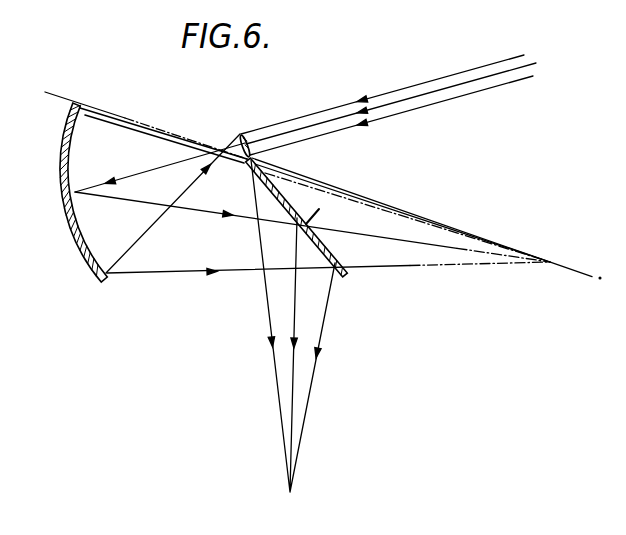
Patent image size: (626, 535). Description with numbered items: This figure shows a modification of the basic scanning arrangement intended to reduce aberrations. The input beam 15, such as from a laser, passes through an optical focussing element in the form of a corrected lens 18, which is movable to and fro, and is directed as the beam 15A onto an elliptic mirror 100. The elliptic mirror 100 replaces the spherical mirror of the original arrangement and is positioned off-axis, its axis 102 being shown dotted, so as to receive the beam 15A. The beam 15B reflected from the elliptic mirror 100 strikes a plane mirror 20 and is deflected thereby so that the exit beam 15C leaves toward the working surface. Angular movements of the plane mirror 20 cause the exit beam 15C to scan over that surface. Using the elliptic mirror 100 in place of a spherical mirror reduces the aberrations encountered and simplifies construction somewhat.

The elliptic mirror 100 is at (72, 230).
The axis 102 is at (90, 104).
The corrected lens 18 is at (241, 137).
The plane mirror 20 is at (338, 260).
The input beam 15 is at (455, 86).
The beam 15A is at (193, 160).
The reflected beam 15B is at (180, 272).
The exit beam 15C is at (305, 417).